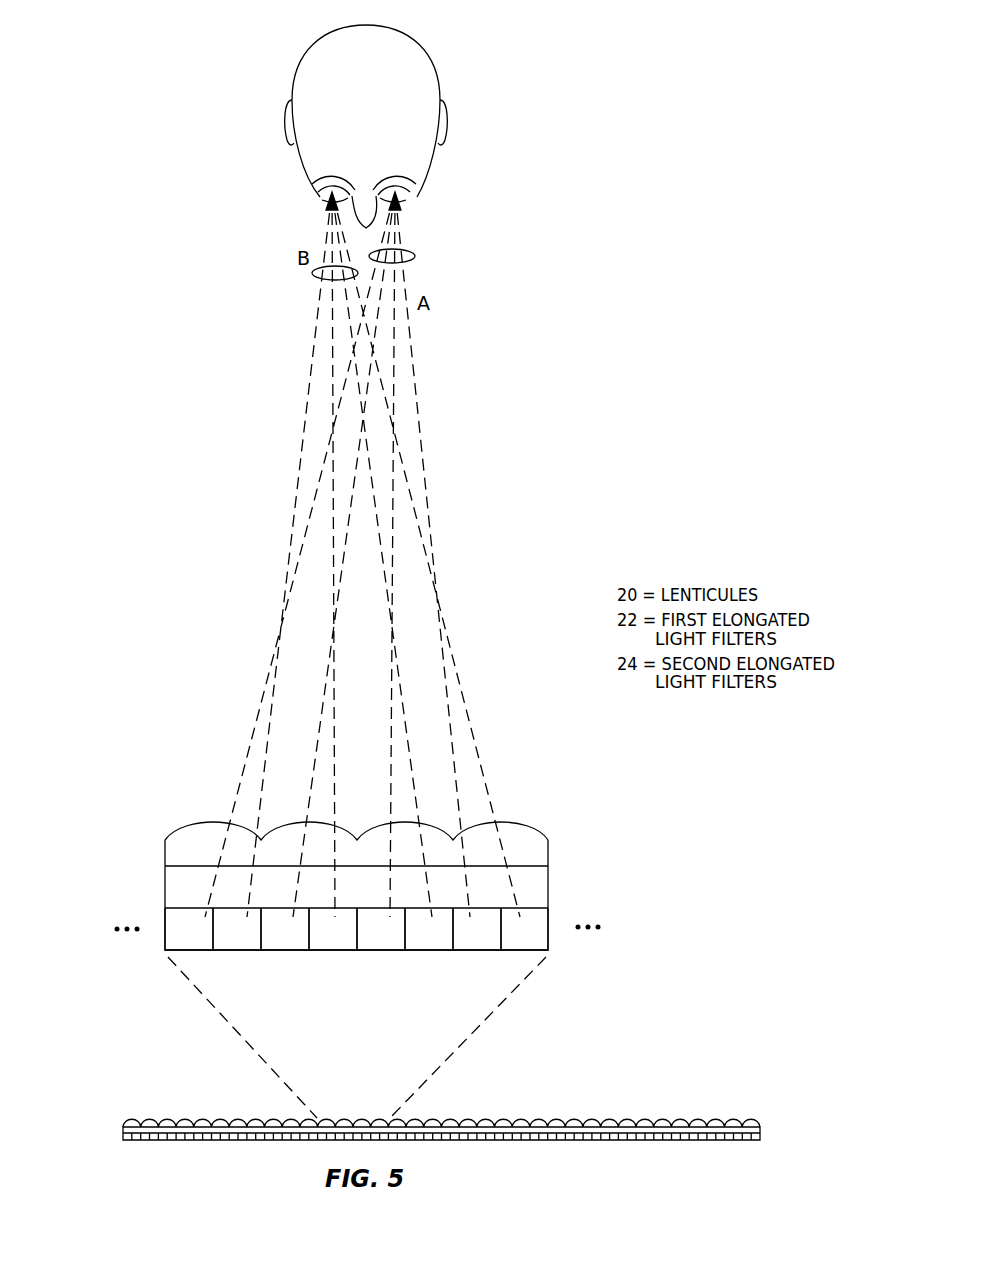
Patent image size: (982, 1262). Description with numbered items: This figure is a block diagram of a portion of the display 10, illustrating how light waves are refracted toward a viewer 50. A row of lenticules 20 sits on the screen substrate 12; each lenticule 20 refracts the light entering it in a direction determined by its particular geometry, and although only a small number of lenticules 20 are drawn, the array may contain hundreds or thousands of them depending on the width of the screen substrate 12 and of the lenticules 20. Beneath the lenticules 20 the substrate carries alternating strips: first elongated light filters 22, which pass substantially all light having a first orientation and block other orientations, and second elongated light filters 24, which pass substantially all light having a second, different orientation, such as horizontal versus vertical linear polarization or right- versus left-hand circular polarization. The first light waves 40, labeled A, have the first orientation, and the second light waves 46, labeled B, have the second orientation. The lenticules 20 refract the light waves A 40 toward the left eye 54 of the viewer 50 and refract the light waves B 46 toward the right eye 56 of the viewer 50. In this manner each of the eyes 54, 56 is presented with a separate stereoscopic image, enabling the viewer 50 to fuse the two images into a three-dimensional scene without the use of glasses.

The display 10 is at (738, 1086).
The screen substrate 12 is at (549, 887).
The lenticules 20 is at (205, 823).
The first elongated light filters 22 is at (277, 952).
The second elongated light filters 24 is at (423, 953).
The first light waves 40 is at (413, 259).
The second light waves 46 is at (314, 276).
The viewer 50 is at (432, 62).
The left eye 54 is at (408, 191).
The right eye 56 is at (318, 191).